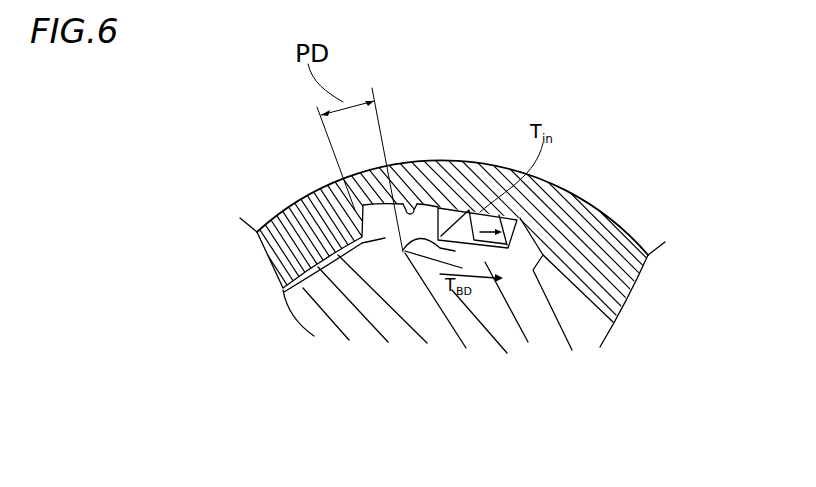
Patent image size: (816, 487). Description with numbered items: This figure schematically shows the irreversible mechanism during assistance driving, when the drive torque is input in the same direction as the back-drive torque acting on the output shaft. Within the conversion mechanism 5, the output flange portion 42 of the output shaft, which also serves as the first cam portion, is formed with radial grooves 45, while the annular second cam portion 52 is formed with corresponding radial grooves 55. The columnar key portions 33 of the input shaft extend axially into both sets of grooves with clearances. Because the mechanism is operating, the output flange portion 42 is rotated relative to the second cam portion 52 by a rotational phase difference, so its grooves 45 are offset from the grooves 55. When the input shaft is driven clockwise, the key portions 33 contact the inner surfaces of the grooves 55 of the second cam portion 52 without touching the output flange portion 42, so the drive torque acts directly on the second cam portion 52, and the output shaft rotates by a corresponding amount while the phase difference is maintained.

The conversion mechanism 5 is at (688, 184).
The second cam portion 52 is at (587, 204).
The grooves 55 is at (410, 206).
The key portions 33 is at (438, 206).
The output flange portion 42 is at (540, 332).
The grooves 45 is at (403, 253).